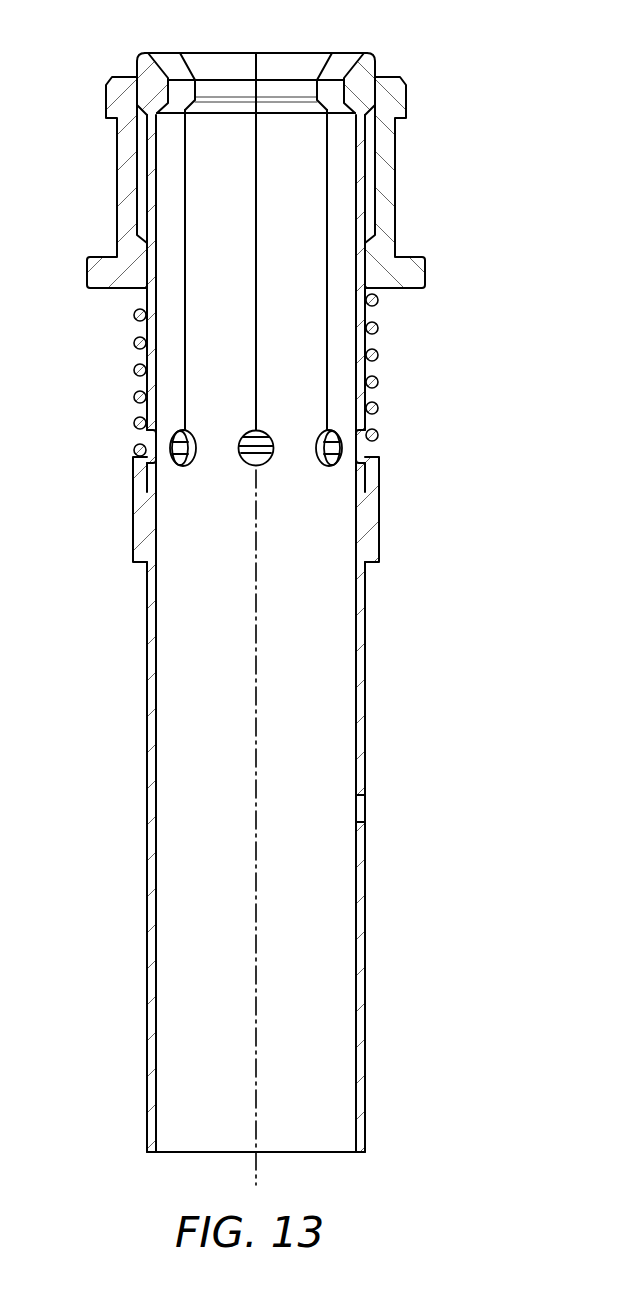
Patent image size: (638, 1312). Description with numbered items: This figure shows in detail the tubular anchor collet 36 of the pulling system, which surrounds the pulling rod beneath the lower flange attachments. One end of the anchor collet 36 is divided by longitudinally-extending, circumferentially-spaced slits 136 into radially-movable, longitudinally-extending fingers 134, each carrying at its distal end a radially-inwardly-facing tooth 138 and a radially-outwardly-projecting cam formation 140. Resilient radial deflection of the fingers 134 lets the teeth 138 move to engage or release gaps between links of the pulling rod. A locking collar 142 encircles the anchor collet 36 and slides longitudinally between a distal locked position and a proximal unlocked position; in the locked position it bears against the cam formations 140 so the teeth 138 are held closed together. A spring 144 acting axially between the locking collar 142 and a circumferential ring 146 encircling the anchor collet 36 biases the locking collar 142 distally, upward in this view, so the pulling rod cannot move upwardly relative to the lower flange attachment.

The anchor collet 36 is at (90, 728).
The fingers 134 is at (280, 412).
The slits 136 is at (250, 355).
The tooth 138 is at (276, 58).
The cam formation 140 is at (146, 53).
The locking collar 142 is at (396, 172).
The spring 144 is at (379, 382).
The circumferential ring 146 is at (381, 520).